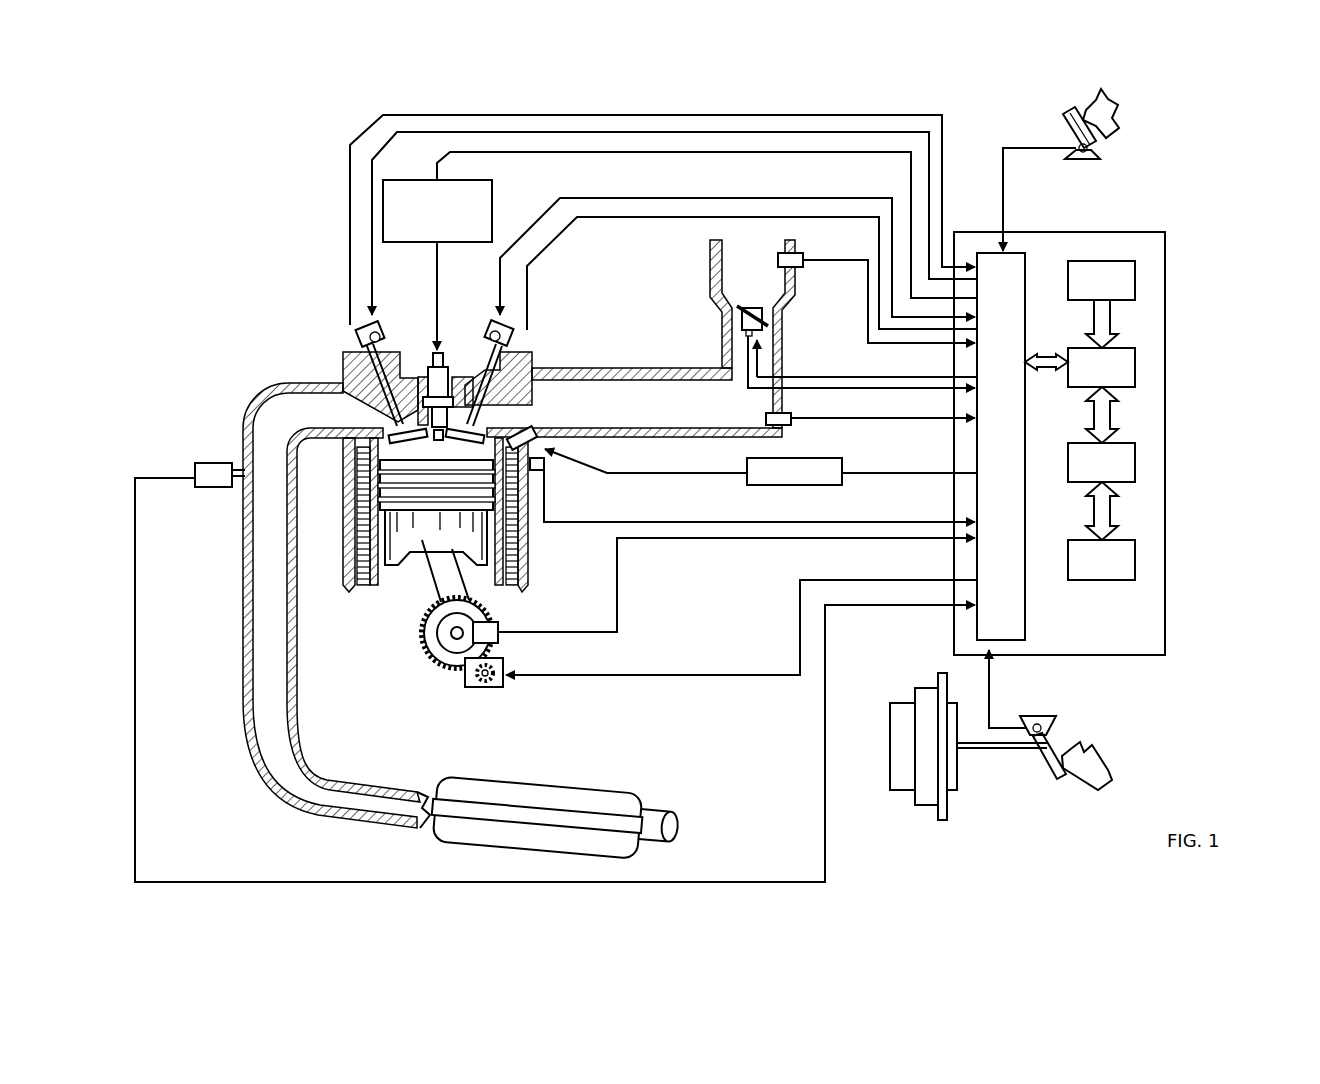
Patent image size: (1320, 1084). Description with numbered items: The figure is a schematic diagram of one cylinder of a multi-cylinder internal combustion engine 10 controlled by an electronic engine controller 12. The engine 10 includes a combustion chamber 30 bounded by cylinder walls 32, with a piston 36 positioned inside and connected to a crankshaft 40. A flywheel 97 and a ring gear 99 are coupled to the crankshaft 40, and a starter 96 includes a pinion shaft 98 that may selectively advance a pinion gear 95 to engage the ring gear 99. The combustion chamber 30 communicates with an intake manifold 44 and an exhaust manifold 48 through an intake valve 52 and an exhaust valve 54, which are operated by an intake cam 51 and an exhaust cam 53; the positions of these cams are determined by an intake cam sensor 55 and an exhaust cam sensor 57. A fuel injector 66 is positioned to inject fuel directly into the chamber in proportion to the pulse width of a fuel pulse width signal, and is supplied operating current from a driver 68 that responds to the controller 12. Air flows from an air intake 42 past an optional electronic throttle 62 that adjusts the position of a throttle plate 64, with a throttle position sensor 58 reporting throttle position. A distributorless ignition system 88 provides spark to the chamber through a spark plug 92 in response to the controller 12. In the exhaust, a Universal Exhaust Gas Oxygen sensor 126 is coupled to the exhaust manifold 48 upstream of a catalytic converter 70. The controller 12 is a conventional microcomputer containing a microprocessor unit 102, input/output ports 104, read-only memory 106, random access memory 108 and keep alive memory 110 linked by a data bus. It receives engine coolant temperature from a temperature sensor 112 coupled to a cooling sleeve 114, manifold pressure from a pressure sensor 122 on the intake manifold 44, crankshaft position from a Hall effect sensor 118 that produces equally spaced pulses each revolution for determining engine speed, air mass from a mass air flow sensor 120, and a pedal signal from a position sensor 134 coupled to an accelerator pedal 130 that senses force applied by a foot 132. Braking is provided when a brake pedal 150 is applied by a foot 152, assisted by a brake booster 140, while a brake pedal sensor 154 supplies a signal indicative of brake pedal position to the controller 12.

The internal combustion engine 10 is at (283, 311).
The electronic engine controller 12 is at (1152, 232).
The combustion chamber 30 is at (435, 446).
The cylinder walls 32 is at (472, 541).
The piston 36 is at (420, 580).
The crankshaft 40 is at (440, 664).
The air intake 42 is at (739, 287).
The intake manifold 44 is at (679, 415).
The exhaust manifold 48 is at (302, 418).
The intake cam 51 is at (493, 320).
The intake valve 52 is at (475, 410).
The exhaust cam 53 is at (380, 318).
The exhaust valve 54 is at (345, 388).
The intake cam sensor 55 is at (514, 344).
The exhaust cam sensor 57 is at (360, 340).
The throttle position sensor 58 is at (730, 340).
The electronic throttle 62 is at (770, 318).
The throttle plate 64 is at (740, 318).
The fuel injector 66 is at (530, 450).
The driver 68 is at (762, 487).
The catalytic converter 70 is at (455, 780).
The distributorless ignition system 88 is at (398, 180).
The spark plug 92 is at (443, 352).
The pinion gear 95 is at (493, 690).
The starter 96 is at (504, 688).
The flywheel 97 is at (425, 643).
The pinion shaft 98 is at (478, 688).
The ring gear 99 is at (447, 676).
The microprocessor unit 102 is at (1136, 362).
The input/output ports 104 is at (1026, 262).
The read-only memory 106 is at (1136, 280).
The random access memory 108 is at (1136, 462).
The keep alive memory 110 is at (1136, 560).
The temperature sensor 112 is at (538, 472).
The cooling sleeve 114 is at (512, 540).
The Hall effect sensor 118 is at (500, 622).
The mass air flow sensor 120 is at (800, 253).
The pressure sensor 122 is at (790, 424).
The Universal Exhaust Gas Oxygen sensor 126 is at (195, 468).
The accelerator pedal 130 is at (1063, 125).
The foot 132 is at (1112, 110).
The position sensor 134 is at (1098, 152).
The brake booster 140 is at (890, 790).
The brake pedal 150 is at (1058, 778).
The foot 152 is at (1093, 745).
The brake pedal sensor 154 is at (1028, 727).